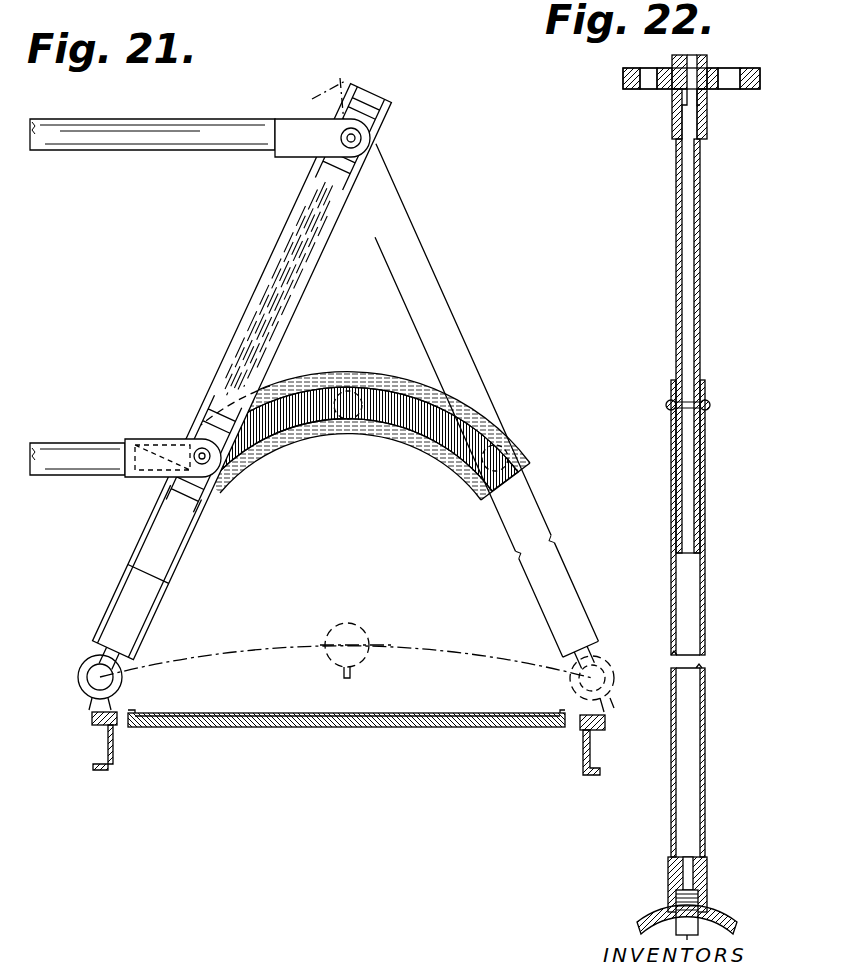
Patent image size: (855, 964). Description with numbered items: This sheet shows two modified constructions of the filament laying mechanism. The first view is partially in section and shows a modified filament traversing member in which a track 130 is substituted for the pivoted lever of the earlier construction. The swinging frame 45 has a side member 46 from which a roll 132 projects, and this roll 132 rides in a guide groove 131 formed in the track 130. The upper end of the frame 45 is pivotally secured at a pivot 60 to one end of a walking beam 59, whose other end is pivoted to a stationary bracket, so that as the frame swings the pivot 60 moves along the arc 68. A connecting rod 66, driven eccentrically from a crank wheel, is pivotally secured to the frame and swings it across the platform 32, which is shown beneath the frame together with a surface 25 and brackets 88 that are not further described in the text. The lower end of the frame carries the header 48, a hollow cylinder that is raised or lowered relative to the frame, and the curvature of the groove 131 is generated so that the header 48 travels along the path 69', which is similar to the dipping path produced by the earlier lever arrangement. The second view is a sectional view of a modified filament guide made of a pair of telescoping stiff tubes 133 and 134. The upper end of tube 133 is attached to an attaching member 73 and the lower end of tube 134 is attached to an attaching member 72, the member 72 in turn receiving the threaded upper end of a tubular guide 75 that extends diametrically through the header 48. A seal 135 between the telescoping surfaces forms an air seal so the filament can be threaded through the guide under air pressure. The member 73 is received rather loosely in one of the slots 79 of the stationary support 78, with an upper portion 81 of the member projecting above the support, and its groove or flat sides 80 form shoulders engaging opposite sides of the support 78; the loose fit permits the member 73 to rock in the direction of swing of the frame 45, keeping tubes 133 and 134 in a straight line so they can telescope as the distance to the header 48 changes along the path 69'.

In FIG. 21, the walking beam 59 is at (182, 119).
In FIG. 21, the pivot 60 is at (362, 138).
In FIG. 21, the arc 68 is at (350, 208).
In FIG. 21, the swinging frame 45 is at (254, 273).
In FIG. 21, the side member 46 is at (238, 347).
In FIG. 21, the track 130 is at (338, 364).
In FIG. 21, the guide groove 131 is at (388, 418).
In FIG. 21, the roll 132 is at (162, 440).
In FIG. 21, the connecting rod 66 is at (100, 478).
In FIG. 21, the header 48 is at (80, 681).
In FIG. 22, the header 48 is at (645, 916).
In FIG. 21, the path 69' is at (346, 663).
In FIG. 21, the panel surface 25 is at (425, 705).
In FIG. 21, the platform 32 is at (398, 728).
In FIG. 21, the bracket 88 is at (114, 753).
In FIG. 22, the stationary support 78 is at (626, 82).
In FIG. 22, the slots 79 is at (736, 68).
In FIG. 22, the boss 81 is at (704, 65).
In FIG. 22, the groove or flat sides 80 is at (703, 84).
In FIG. 22, the attaching member 73 is at (708, 130).
In FIG. 22, the stiff tube 133 is at (701, 291).
In FIG. 22, the seal 135 is at (711, 405).
In FIG. 22, the stiff tube 134 is at (706, 463).
In FIG. 22, the attaching member 72 is at (709, 882).
In FIG. 22, the tubular guide 75 is at (694, 929).